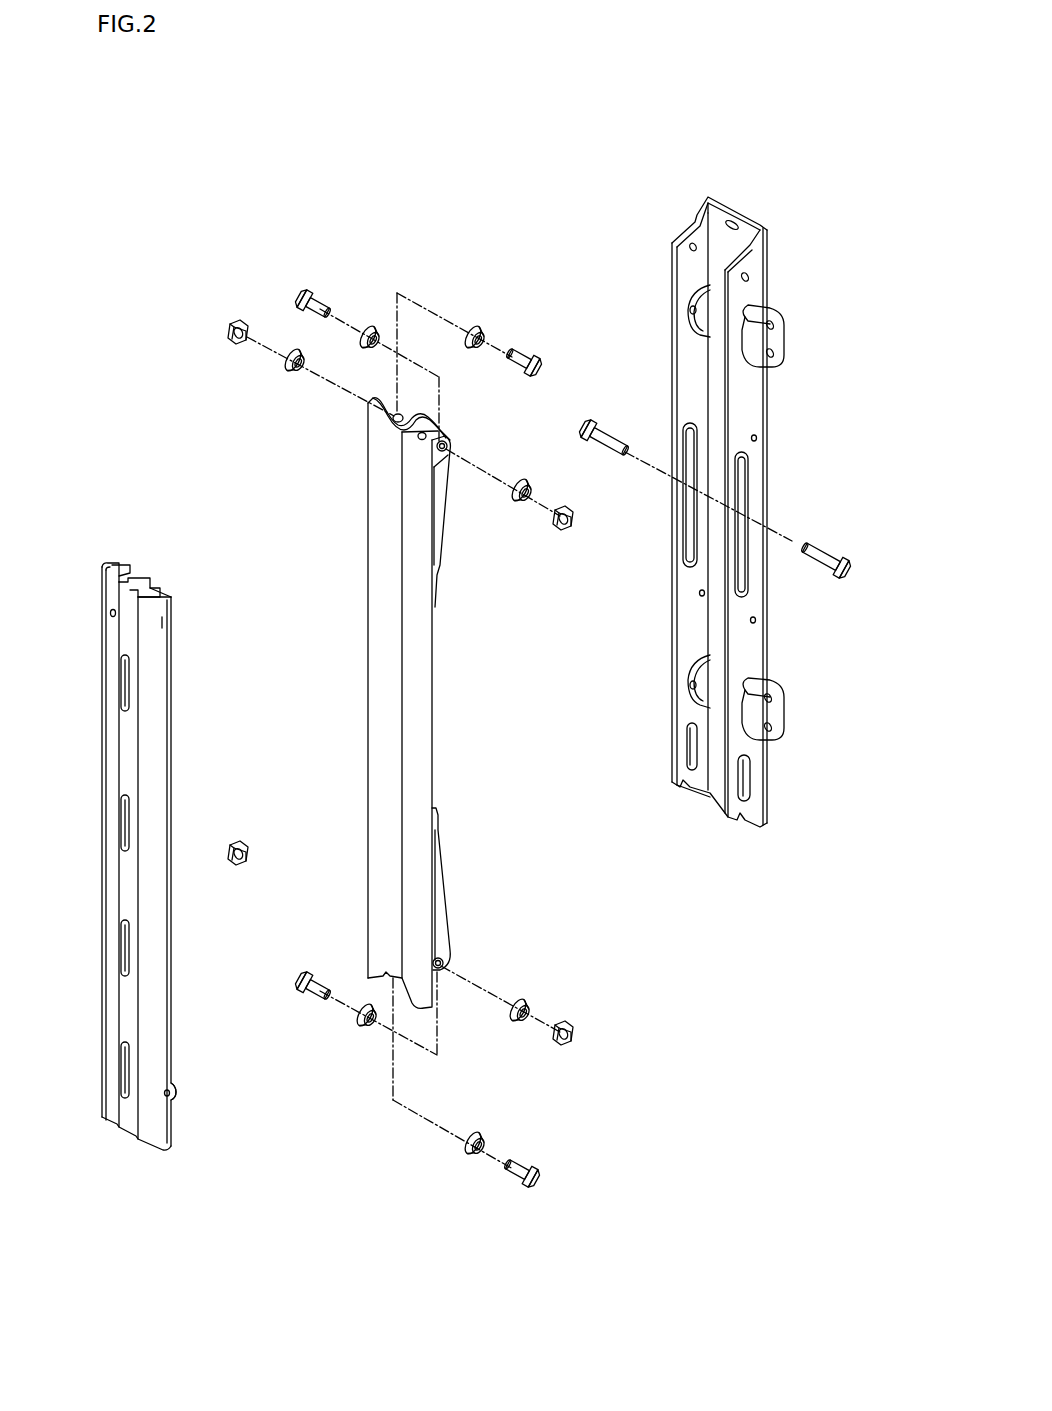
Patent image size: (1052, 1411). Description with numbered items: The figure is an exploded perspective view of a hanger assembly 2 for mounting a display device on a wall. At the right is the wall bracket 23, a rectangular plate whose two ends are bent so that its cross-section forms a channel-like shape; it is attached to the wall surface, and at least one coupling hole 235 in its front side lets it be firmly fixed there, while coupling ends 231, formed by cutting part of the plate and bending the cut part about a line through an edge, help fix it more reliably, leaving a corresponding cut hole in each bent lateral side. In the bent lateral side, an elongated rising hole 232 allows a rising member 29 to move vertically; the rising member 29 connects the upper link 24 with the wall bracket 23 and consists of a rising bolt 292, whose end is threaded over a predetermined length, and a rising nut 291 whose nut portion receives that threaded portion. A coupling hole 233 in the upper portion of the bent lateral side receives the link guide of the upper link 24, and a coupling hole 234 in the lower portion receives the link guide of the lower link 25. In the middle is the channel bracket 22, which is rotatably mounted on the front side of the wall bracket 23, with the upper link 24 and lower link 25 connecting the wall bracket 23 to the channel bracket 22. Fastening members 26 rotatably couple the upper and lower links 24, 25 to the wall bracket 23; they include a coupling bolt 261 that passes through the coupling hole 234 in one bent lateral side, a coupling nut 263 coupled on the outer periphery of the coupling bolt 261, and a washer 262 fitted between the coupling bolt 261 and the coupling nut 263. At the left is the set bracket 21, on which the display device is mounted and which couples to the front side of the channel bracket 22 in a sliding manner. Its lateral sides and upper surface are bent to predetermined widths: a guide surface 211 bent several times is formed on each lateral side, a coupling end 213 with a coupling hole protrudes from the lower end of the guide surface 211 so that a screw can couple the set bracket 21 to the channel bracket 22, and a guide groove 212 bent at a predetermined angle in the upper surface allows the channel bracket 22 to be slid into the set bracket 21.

The hanger assembly 2 is at (324, 156).
The set bracket 21 is at (77, 552).
The guide surface 211 is at (172, 640).
The guide groove 212 is at (163, 590).
The coupling end 213 is at (178, 1099).
The channel bracket 22 is at (326, 488).
The upper link 24 is at (437, 602).
The lower link 25 is at (440, 903).
The wall bracket 23 is at (774, 210).
The coupling end 231 is at (775, 343).
The rising hole 232 is at (742, 563).
The coupling hole 233 is at (749, 280).
The coupling hole 234 is at (745, 777).
The coupling hole 235 is at (733, 221).
The rising member 29 is at (858, 502).
The rising nut 291 is at (612, 430).
The rising bolt 292 is at (813, 548).
The fastening members 26 is at (327, 1242).
The coupling bolt 261 is at (533, 1178).
The washer 262 is at (472, 1155).
The coupling nut 263 is at (240, 868).